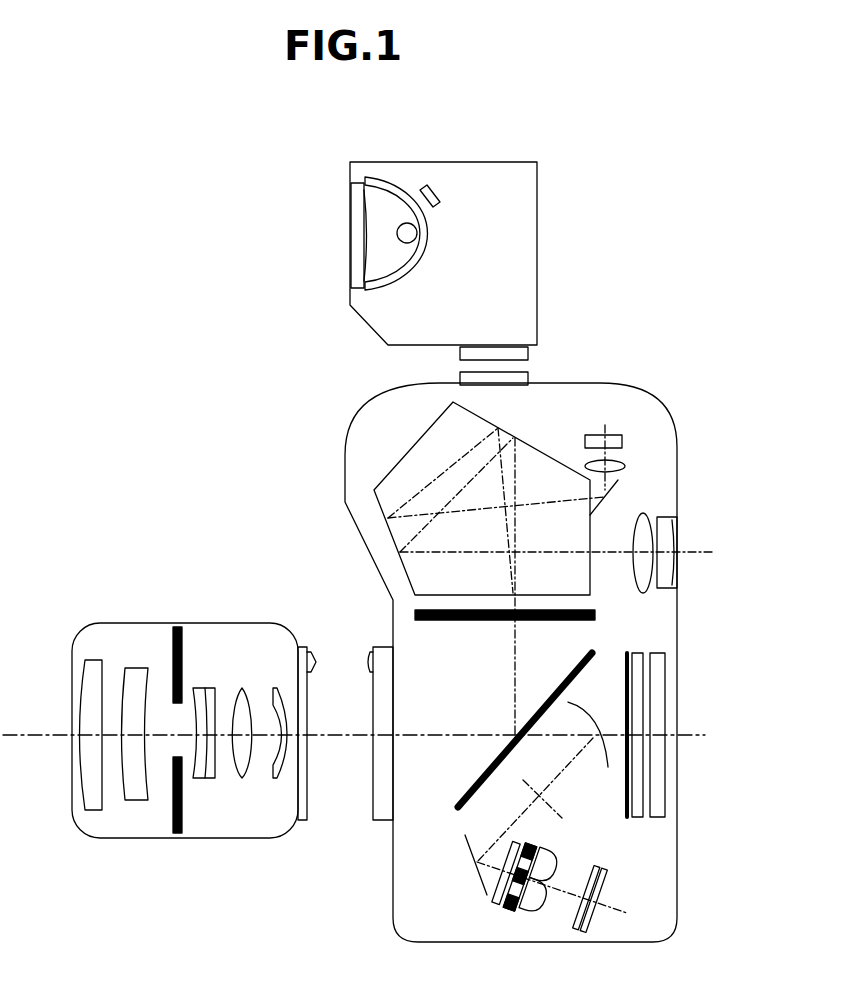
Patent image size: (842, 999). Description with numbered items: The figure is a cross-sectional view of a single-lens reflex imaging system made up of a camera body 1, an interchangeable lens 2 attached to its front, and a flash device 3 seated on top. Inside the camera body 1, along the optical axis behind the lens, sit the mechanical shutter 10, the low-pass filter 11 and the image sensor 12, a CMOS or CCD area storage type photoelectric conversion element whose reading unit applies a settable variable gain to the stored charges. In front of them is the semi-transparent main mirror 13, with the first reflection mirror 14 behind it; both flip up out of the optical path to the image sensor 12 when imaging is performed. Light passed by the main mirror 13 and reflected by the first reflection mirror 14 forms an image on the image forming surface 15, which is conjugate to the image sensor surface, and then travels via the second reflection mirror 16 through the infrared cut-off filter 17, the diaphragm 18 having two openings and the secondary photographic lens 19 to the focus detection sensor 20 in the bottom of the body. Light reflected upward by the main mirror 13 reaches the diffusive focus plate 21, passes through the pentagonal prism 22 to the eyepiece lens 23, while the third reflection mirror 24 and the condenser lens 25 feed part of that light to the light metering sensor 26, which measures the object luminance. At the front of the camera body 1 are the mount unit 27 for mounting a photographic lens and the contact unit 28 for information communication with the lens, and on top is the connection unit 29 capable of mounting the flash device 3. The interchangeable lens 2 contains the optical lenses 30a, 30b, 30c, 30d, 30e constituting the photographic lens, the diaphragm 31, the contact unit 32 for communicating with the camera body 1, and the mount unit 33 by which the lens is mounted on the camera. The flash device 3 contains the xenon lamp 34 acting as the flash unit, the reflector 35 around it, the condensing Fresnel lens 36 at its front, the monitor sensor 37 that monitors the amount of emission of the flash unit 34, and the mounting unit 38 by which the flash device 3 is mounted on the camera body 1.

The camera body 1 is at (345, 455).
The interchangeable lens 2 is at (110, 623).
The flash device 3 is at (487, 162).
The mechanical shutter 10 is at (630, 818).
The low-pass filter 11 is at (640, 817).
The image sensor 12 is at (660, 805).
The semi-transparent main mirror 13 is at (592, 653).
The first reflection mirror 14 is at (598, 760).
The image forming surface 15 is at (557, 812).
The second reflection mirror 16 is at (478, 866).
The infrared cut-off filter 17 is at (496, 906).
The diaphragm 18 is at (508, 913).
The secondary photographic lens 19 is at (527, 916).
The focus detection sensor 20 is at (580, 933).
The focus plate 21 is at (415, 615).
The pentagonal prism 22 is at (408, 467).
The eyepiece lens 23 is at (665, 540).
The third reflection mirror 24 is at (612, 487).
The condenser lens 25 is at (625, 466).
The light metering sensor 26 is at (622, 441).
The mount unit 27 is at (380, 822).
The contact unit 28 is at (372, 660).
The connection unit 29 is at (528, 378).
The optical lens 30a is at (92, 808).
The optical lens 30b is at (137, 797).
The optical lens 30c is at (195, 780).
The optical lens 30d is at (238, 780).
The optical lens 30e is at (284, 780).
The diaphragm 31 is at (178, 627).
The contact unit 32 is at (307, 655).
The mount unit 33 is at (302, 815).
The xenon lamp 34 is at (408, 235).
The reflector 35 is at (400, 180).
The condensing Fresnel lens 36 is at (352, 218).
The monitor sensor 37 is at (441, 200).
The mounting unit 38 is at (528, 353).